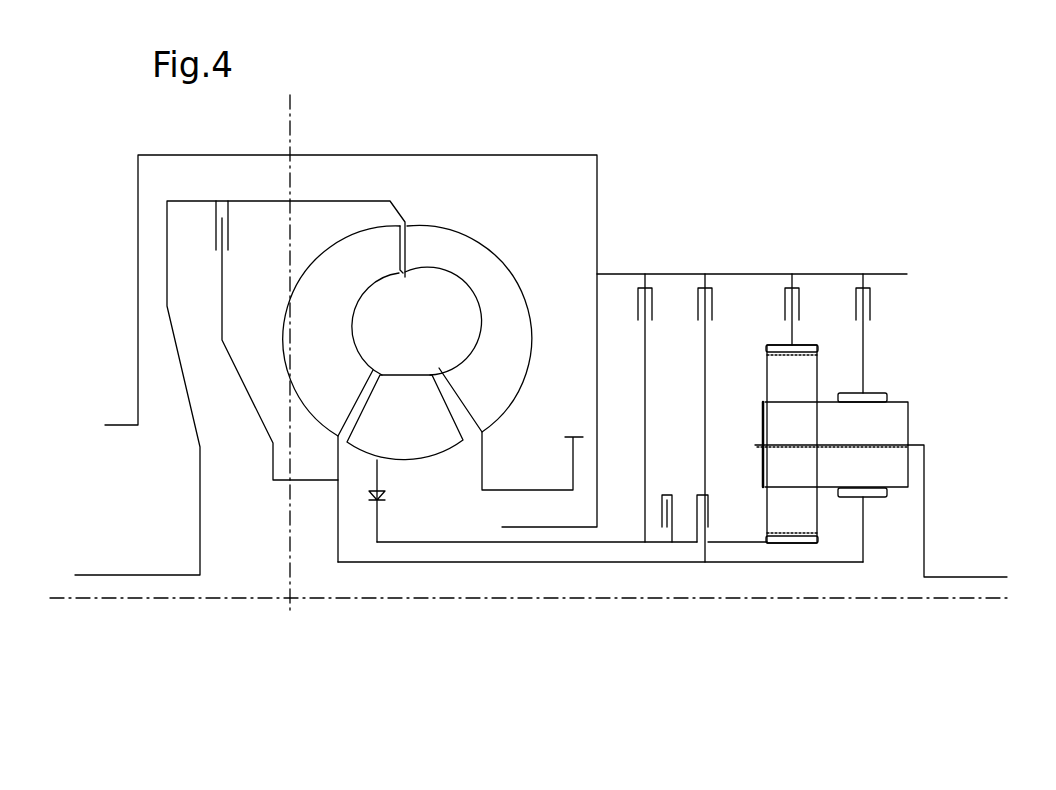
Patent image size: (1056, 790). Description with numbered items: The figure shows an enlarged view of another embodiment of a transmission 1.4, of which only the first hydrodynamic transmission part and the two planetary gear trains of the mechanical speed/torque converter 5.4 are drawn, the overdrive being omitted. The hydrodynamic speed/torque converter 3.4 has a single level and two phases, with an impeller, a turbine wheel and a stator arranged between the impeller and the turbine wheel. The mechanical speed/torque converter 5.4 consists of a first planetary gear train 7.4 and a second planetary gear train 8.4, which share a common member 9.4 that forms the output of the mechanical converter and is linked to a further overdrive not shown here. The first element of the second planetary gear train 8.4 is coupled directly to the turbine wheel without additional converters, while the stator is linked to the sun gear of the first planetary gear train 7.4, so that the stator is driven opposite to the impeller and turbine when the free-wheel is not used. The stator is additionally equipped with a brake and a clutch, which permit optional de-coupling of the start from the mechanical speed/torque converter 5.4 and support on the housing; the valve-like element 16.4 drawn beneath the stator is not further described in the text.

The transmission 1.4 is at (500, 135).
The hydrodynamic speed/torque converter 3.4 is at (463, 237).
The mechanical speed/torque converter 5.4 is at (820, 225).
The first planetary gear train 7.4 is at (786, 565).
The second planetary gear train 8.4 is at (895, 383).
The member 9.4 is at (924, 527).
The check valve 16.4 is at (385, 498).